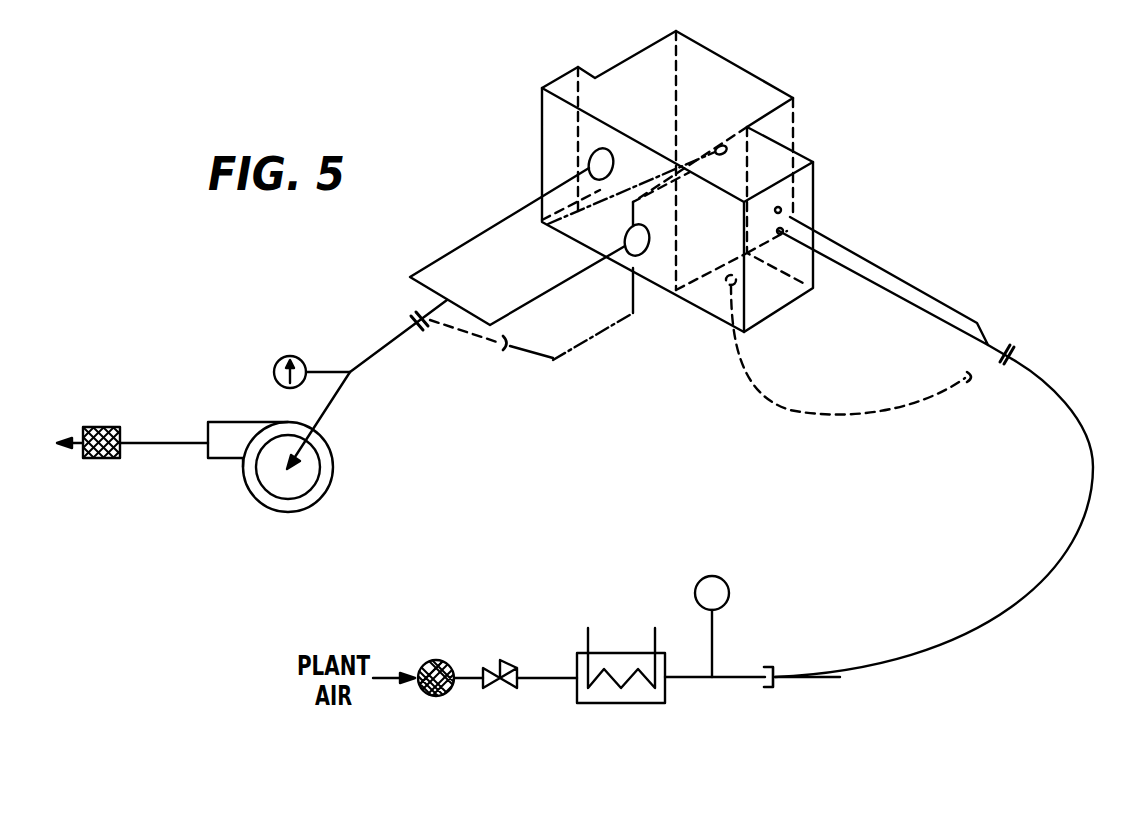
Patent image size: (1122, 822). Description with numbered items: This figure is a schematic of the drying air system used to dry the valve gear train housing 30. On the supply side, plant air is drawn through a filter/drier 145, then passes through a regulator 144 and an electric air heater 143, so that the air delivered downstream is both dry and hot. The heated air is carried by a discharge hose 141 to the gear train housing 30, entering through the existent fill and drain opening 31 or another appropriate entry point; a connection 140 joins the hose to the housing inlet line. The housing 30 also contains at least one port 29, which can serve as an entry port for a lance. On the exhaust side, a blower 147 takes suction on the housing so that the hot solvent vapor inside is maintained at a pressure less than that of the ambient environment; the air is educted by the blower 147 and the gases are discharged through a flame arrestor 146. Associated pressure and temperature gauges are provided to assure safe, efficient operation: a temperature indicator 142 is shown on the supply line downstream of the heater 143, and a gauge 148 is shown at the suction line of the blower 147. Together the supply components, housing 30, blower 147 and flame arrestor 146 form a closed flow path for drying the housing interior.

The port 29 is at (630, 242).
The valve gear train housing 30 is at (783, 93).
The opening 31 is at (783, 229).
The coupling 140 is at (1012, 352).
The discharge hose 141 is at (960, 640).
The temperature indicator 142 is at (730, 598).
The electric air heater 143 is at (668, 705).
The regulator 144 is at (513, 690).
The filter/drier 145 is at (428, 697).
The flame arrestor 146 is at (100, 460).
The blower 147 is at (272, 510).
The pressure gauge 148 is at (282, 358).